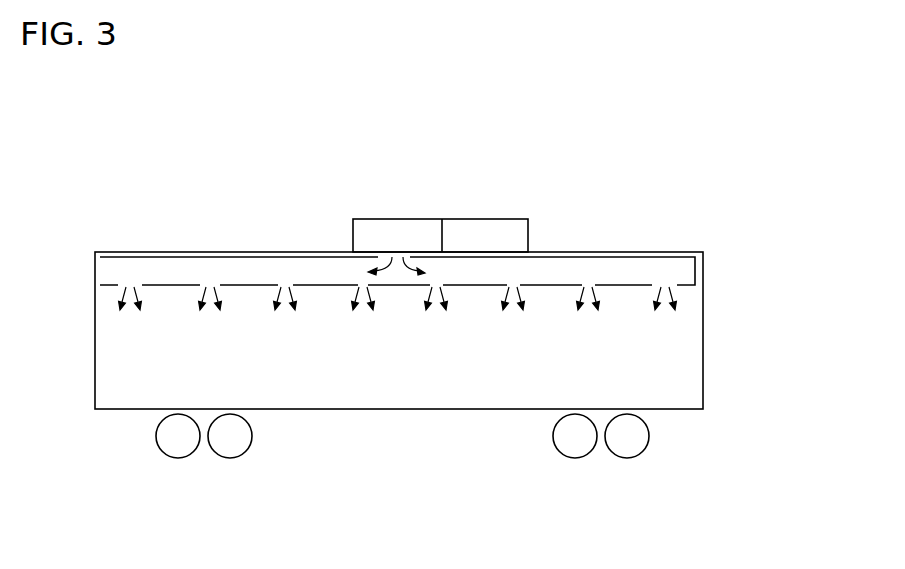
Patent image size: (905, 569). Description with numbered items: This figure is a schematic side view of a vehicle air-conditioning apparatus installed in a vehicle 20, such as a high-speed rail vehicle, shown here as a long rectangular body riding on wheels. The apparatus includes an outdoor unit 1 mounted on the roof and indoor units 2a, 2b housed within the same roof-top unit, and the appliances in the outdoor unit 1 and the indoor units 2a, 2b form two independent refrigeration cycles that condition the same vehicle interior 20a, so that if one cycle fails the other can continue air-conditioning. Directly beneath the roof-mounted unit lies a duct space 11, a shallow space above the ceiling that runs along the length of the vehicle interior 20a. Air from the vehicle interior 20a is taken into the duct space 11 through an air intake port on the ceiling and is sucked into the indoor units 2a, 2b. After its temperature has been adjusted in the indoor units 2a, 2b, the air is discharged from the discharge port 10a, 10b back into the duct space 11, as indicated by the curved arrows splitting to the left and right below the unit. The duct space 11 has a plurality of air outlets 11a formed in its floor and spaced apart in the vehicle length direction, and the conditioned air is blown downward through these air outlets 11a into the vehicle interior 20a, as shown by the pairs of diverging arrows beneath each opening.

The outdoor unit 1 is at (435, 227).
The indoor unit 2a is at (392, 215).
The indoor unit 2b is at (372, 201).
The discharge port 10a is at (426, 227).
The discharge port 10b is at (412, 257).
The duct space 11 is at (640, 265).
The air outlets 11a is at (132, 283).
The vehicle 20 is at (435, 355).
The vehicle interior 20a is at (680, 358).